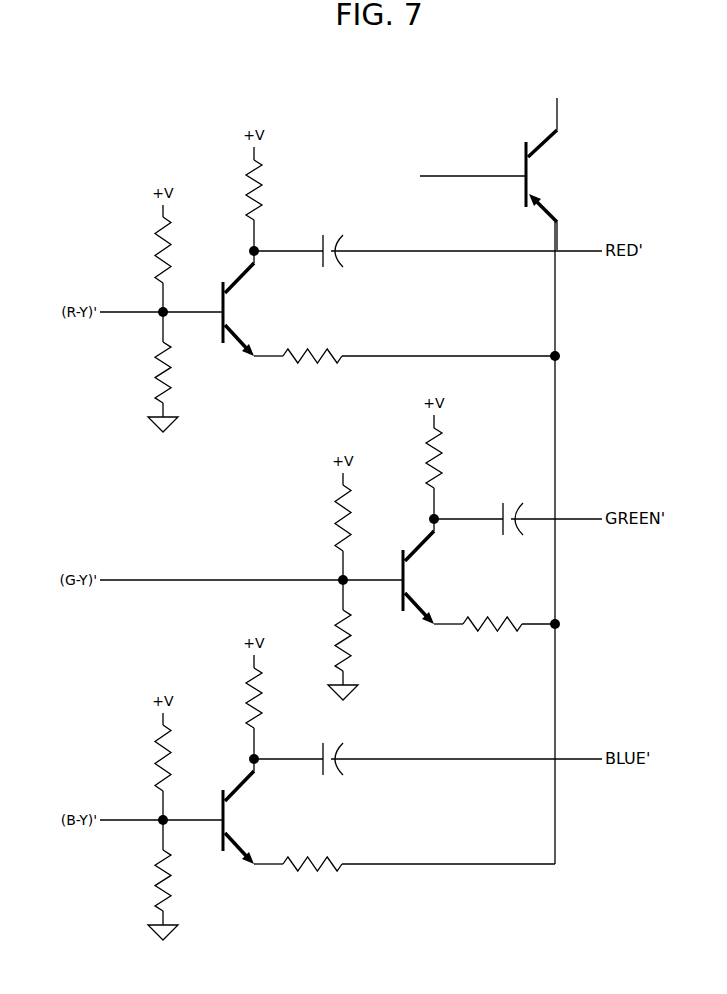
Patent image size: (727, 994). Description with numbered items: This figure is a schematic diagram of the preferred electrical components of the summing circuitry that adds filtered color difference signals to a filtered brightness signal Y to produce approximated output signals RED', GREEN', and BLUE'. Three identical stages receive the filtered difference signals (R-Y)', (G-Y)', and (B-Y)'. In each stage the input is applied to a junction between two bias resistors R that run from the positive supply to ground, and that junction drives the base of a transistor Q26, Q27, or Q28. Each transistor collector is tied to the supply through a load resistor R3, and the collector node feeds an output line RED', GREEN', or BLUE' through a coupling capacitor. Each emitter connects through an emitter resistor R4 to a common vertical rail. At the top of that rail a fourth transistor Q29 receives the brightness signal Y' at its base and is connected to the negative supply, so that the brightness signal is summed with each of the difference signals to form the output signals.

The transistor (R-Y)' stage Q26 is at (253, 303).
The transistor (G-Y)' stage Q27 is at (433, 571).
The transistor (B-Y)' stage Q28 is at (253, 811).
The transistor Y' stage Q29 is at (483, 163).
The bias resistor R is at (244, 564).
The collector load resistor R3 is at (359, 444).
The emitter resistor R4 is at (402, 599).